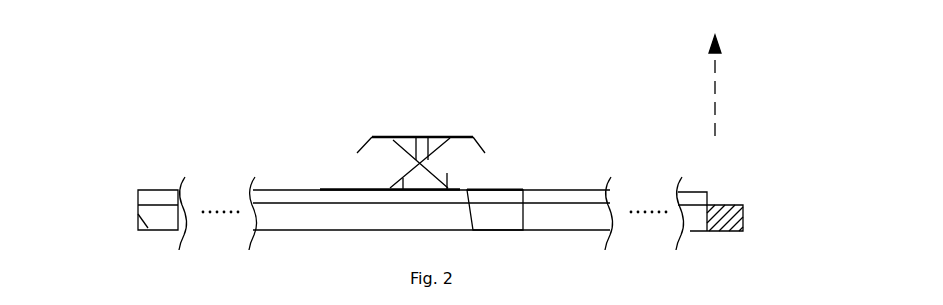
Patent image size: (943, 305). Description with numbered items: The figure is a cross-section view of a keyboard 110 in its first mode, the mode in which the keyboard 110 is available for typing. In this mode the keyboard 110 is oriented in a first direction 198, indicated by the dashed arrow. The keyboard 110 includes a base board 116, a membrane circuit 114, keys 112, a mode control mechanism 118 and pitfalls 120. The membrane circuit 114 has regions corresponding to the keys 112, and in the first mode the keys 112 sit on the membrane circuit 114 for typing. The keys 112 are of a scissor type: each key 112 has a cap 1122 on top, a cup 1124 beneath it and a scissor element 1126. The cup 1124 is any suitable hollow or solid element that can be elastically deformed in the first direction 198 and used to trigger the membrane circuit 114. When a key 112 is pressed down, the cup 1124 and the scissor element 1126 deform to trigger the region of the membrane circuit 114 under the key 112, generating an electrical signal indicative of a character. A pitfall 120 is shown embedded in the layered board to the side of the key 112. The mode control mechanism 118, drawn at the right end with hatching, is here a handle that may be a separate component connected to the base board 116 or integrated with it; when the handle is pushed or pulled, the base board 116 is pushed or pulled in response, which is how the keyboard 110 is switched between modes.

The keyboard 110 is at (182, 50).
The key 112 is at (497, 118).
The membrane circuit 114 is at (162, 200).
The base board 116 is at (147, 227).
The mode control mechanism 118 is at (730, 203).
The pitfall 120 is at (498, 203).
The first direction 198 is at (751, 88).
The cap 1122 is at (360, 138).
The cup 1124 is at (418, 148).
The scissor element 1126 is at (431, 148).